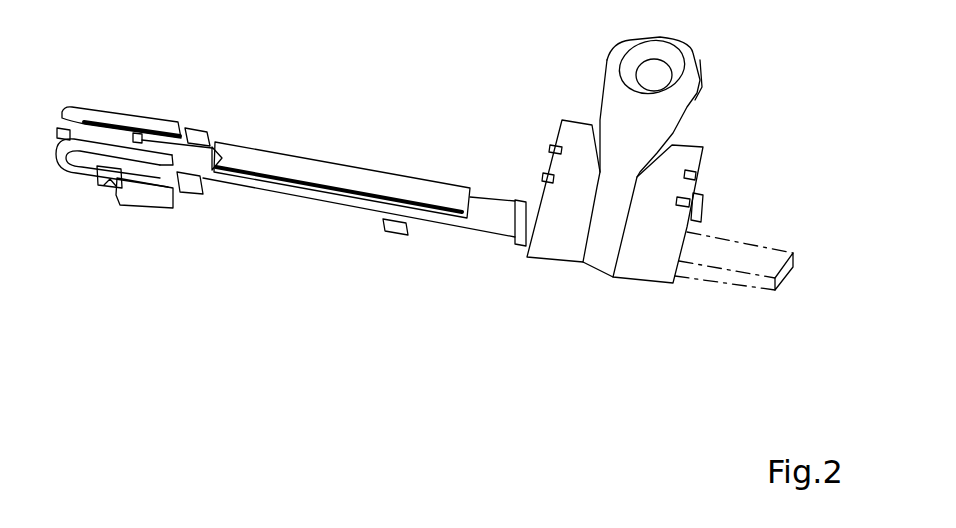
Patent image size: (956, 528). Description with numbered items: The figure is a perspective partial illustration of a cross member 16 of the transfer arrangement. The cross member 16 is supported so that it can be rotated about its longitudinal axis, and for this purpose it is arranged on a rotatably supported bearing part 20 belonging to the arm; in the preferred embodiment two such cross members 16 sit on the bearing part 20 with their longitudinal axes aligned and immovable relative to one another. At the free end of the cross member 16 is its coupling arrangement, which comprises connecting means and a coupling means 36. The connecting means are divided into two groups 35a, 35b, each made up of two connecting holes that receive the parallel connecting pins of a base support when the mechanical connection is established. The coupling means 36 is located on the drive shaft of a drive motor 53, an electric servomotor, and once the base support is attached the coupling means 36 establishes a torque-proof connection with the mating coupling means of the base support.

The cross member 16 is at (285, 188).
The bearing part 20 is at (622, 102).
The first group of connecting means 35a is at (214, 148).
The second group of connecting means 35b is at (407, 232).
The coupling means 36 is at (177, 197).
The drive motor 53 is at (113, 192).